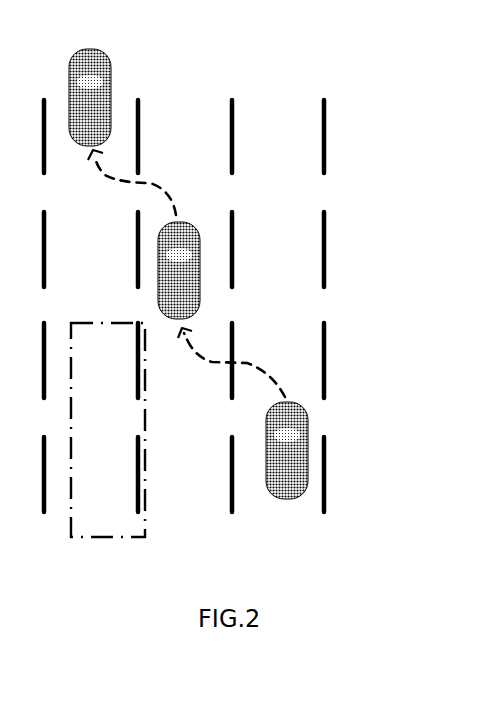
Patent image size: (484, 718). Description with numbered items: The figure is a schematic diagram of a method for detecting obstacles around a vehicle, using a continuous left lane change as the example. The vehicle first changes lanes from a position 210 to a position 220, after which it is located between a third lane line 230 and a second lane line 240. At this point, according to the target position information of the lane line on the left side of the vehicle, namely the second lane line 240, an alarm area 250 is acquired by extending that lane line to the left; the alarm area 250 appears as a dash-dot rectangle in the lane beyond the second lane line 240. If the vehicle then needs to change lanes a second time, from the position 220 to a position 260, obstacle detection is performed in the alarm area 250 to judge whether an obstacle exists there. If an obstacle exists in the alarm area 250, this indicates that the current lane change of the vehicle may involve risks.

The position 210 is at (287, 460).
The position 220 is at (183, 280).
The third lane line 230 is at (234, 126).
The second lane line 240 is at (139, 115).
The alarm area 250 is at (108, 537).
The position 260 is at (92, 105).